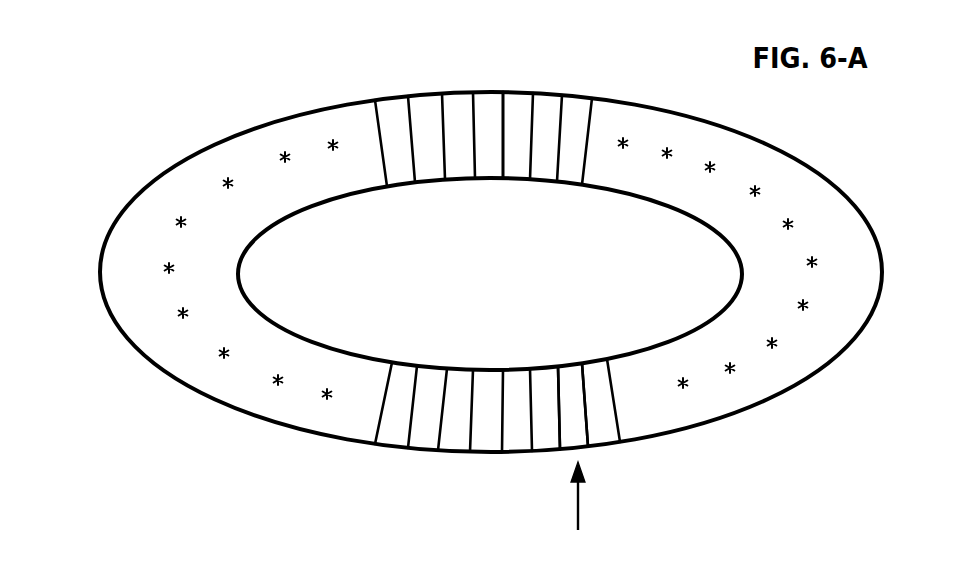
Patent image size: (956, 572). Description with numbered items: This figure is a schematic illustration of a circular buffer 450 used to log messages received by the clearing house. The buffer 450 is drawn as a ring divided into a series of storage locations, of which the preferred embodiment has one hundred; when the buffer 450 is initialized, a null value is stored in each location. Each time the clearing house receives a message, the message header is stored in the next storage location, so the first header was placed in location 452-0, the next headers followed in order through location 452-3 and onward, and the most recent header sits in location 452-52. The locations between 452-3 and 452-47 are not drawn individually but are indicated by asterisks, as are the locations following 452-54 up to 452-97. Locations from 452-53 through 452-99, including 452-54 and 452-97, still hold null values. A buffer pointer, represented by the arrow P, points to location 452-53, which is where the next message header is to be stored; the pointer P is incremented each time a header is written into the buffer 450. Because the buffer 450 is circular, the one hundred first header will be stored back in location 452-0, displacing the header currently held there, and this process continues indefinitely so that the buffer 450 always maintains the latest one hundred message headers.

The circular buffer 450 is at (158, 88).
The storage location 452-3 is at (387, 97).
The storage location 452-0 is at (480, 92).
The storage location 452-99 is at (510, 90).
The storage location 452-97 is at (577, 92).
The storage location 452-47 is at (373, 447).
The storage location 452-52 is at (540, 453).
The storage location 452-53 is at (582, 450).
The storage location 452-54 is at (620, 450).
The buffer pointer P is at (578, 520).